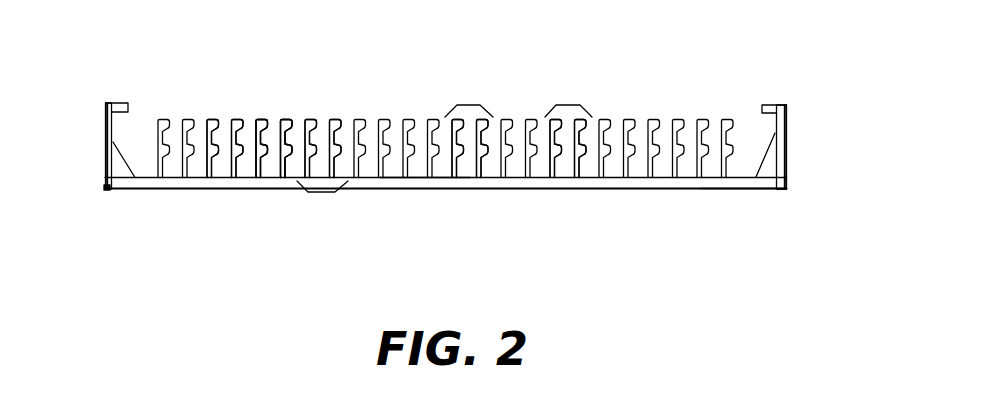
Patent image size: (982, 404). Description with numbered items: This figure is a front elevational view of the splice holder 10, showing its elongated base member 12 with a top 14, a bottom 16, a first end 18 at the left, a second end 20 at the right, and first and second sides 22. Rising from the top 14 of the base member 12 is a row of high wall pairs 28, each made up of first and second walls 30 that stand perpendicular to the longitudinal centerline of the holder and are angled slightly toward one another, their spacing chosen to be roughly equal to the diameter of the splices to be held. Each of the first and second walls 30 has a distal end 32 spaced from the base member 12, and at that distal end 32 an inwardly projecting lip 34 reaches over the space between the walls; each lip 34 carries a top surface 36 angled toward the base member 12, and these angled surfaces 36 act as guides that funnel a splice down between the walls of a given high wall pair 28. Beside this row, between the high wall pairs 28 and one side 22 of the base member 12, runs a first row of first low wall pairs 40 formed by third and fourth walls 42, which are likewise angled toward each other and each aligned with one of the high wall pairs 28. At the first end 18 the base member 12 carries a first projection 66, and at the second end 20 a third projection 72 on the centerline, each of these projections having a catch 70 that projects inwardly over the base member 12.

The splice holder 10 is at (655, 80).
The base member 12 is at (180, 186).
The top 14 is at (143, 176).
The bottom 16 is at (742, 190).
The first end 18 is at (104, 181).
The second end 20 is at (788, 183).
The first and second sides 22 is at (423, 186).
The high wall pair 28 is at (468, 105).
The first and second walls 30 is at (373, 127).
The distal end 32 is at (262, 121).
The inwardly projecting lip 34 is at (278, 125).
The top surface 36 is at (310, 123).
The first low wall pair 40 is at (323, 192).
The third and fourth walls 42 is at (212, 167).
The first projection 66 is at (105, 131).
The catch 70 is at (127, 103).
The third projection 72 is at (788, 128).